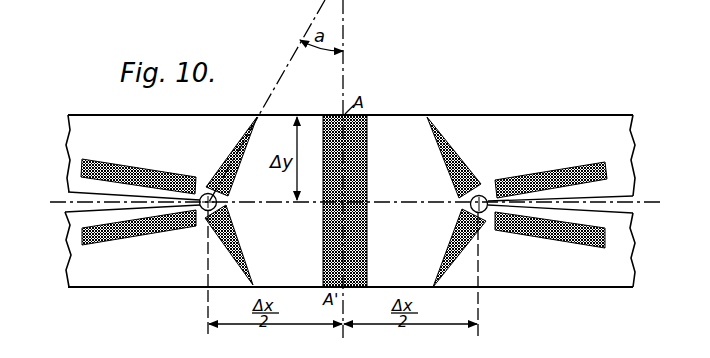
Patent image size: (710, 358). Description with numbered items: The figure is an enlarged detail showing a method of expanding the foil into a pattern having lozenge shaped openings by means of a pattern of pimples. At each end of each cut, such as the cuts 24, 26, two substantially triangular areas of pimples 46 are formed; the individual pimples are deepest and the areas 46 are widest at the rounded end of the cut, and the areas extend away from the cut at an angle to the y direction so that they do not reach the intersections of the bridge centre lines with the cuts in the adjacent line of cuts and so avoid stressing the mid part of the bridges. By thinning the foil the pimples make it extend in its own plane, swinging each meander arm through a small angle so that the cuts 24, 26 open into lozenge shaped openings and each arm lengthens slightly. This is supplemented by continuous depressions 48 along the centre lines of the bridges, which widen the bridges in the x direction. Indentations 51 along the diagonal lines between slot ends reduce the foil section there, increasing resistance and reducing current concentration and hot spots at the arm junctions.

The cut 24 is at (75, 201).
The cut 26 is at (612, 205).
The triangular areas of pimples 46 is at (230, 157).
The continuous depressions 48 is at (355, 190).
The indentations 51 is at (143, 175).